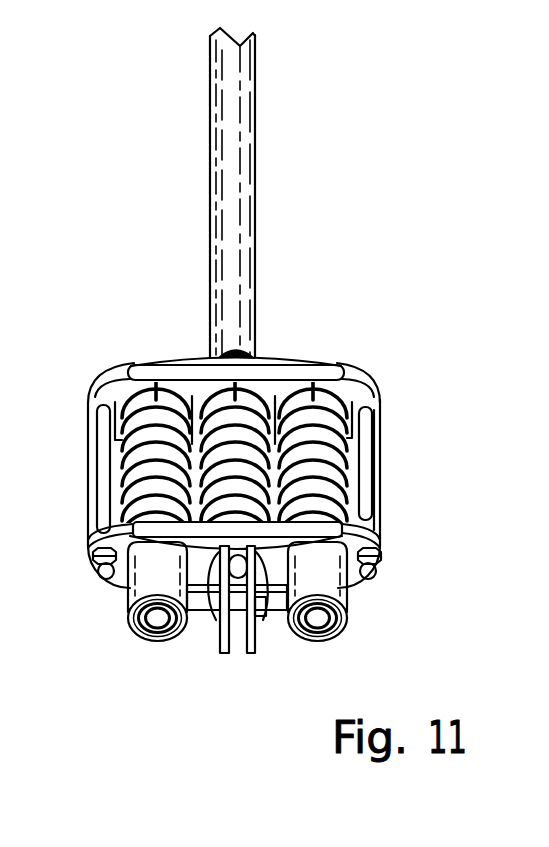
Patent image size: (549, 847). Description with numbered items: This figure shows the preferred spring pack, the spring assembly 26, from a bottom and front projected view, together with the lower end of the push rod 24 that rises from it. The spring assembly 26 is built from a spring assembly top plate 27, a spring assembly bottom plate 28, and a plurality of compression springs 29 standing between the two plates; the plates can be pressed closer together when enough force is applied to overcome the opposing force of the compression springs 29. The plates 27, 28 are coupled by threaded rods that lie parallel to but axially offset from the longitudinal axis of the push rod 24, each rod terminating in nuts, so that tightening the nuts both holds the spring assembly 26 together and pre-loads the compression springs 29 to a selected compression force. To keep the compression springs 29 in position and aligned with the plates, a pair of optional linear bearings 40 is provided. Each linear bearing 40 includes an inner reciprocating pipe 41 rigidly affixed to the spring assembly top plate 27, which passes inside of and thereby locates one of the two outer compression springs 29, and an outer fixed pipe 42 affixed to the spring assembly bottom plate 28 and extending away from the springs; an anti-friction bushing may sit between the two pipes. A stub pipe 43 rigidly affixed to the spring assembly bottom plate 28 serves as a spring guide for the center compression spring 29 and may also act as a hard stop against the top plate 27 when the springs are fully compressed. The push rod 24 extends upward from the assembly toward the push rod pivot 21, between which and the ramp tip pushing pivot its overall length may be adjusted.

The push rod pivot 21 is at (213, 612).
The push rod 24 is at (225, 222).
The spring assembly 26 is at (90, 447).
The spring assembly top plate 27 is at (90, 403).
The spring assembly bottom plate 28 is at (92, 548).
The compression springs 29 is at (123, 484).
The linear bearing 40 is at (127, 616).
The inner reciprocating pipe 41 is at (143, 637).
The outer fixed pipe 42 is at (163, 638).
The stub pipe 43 is at (262, 612).